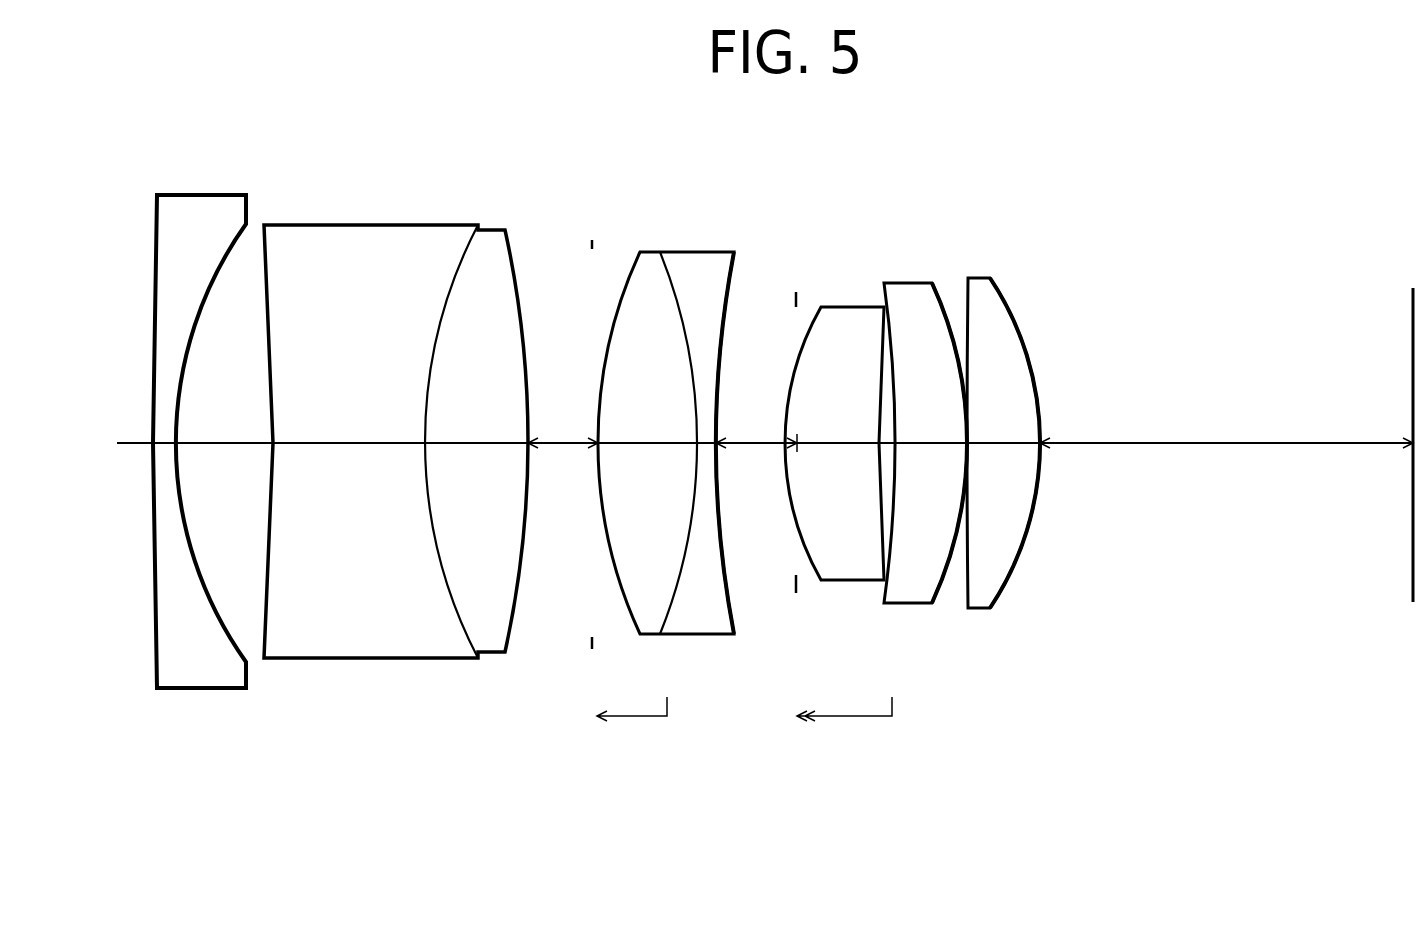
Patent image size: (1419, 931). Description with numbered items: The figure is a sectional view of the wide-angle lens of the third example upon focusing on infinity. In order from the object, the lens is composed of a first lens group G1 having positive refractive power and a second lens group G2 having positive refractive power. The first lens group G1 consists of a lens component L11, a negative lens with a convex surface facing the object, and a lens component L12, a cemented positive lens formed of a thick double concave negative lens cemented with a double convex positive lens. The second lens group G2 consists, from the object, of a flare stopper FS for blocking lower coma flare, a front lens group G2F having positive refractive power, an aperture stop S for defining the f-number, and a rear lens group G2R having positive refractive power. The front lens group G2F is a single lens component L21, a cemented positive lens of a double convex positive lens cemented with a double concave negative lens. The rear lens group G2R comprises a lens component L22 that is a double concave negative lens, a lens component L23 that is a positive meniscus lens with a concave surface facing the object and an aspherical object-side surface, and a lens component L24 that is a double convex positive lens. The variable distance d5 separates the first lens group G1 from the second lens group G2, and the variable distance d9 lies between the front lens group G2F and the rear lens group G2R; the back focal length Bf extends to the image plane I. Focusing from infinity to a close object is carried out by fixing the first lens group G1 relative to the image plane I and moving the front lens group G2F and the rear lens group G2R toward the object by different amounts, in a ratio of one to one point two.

The 11 lens component L11 is at (209, 195).
The 12 lens component L12 is at (264, 219).
The 21 lens component L21 is at (625, 230).
The 22 lens component L22 is at (855, 305).
The 23 lens component L23 is at (908, 282).
The 24 lens component L24 is at (980, 278).
The flare stopper FS is at (592, 238).
The aperture stop S is at (796, 290).
The image plane I is at (1413, 322).
The first lens group G1 is at (340, 482).
The second lens group G2 is at (807, 491).
The front lens group G2F is at (660, 447).
The rear lens group G2R is at (912, 472).
The variable distance d5 is at (563, 430).
The variable distance d9 is at (756, 432).
The back focal length Bf is at (1226, 430).